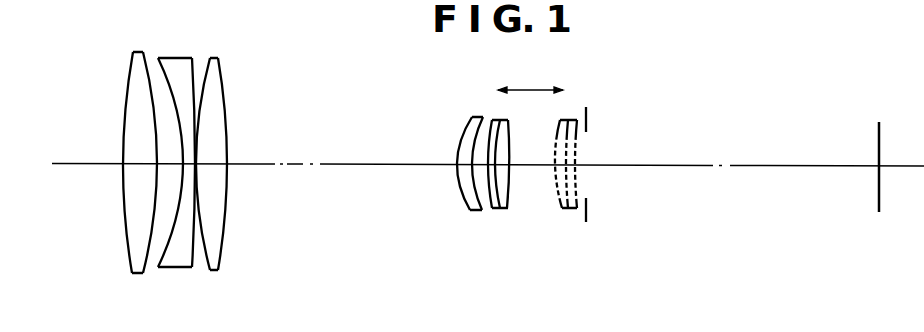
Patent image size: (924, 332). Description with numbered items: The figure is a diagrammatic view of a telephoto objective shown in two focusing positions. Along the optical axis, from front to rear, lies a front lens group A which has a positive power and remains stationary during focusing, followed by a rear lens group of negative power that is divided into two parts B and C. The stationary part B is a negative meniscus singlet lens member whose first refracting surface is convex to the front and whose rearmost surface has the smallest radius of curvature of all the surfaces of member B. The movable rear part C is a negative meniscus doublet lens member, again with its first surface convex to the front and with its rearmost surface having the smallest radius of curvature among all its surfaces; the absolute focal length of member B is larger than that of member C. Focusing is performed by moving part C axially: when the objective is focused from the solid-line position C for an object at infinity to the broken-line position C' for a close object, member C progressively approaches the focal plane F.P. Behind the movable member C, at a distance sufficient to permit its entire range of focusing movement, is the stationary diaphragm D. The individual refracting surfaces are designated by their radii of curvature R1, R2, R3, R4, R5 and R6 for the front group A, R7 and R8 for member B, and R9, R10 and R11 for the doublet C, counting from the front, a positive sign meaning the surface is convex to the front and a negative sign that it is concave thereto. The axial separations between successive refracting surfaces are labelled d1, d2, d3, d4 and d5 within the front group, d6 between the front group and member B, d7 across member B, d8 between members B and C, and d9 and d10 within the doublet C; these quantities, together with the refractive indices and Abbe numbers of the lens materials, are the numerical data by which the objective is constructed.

The front lens group A is at (184, 170).
The stationary part of rear lens group B is at (459, 157).
The movable rear part of rear lens group C is at (520, 157).
The close-object position of movable member C C' is at (531, 77).
The diaphragm D is at (587, 210).
The focal plane F.P. is at (880, 128).
The radius of curvature of first surface R1 is at (130, 262).
The radius of curvature of second surface R2 is at (143, 274).
The radius of curvature of third surface R3 is at (158, 268).
The radius of curvature of fourth surface R4 is at (193, 270).
The radius of curvature of fifth surface R5 is at (210, 273).
The radius of curvature of sixth surface R6 is at (223, 257).
The radius of curvature of seventh surface R7 is at (465, 203).
The radius of curvature of eighth surface R8 is at (479, 213).
The radius of curvature of ninth surface R9 is at (494, 212).
The radius of curvature of tenth surface R10 is at (510, 212).
The radius of curvature of eleventh surface R11 is at (508, 204).
The first axial separation d1 is at (132, 180).
The second axial separation d2 is at (170, 149).
The third axial separation d3 is at (203, 183).
The fourth axial separation d4 is at (196, 160).
The fifth axial separation d5 is at (229, 183).
The sixth axial separation d6 is at (370, 152).
The seventh axial separation d7 is at (466, 164).
The eighth axial separation d8 is at (459, 185).
The ninth axial separation d9 is at (503, 150).
The tenth axial separation d10 is at (517, 186).